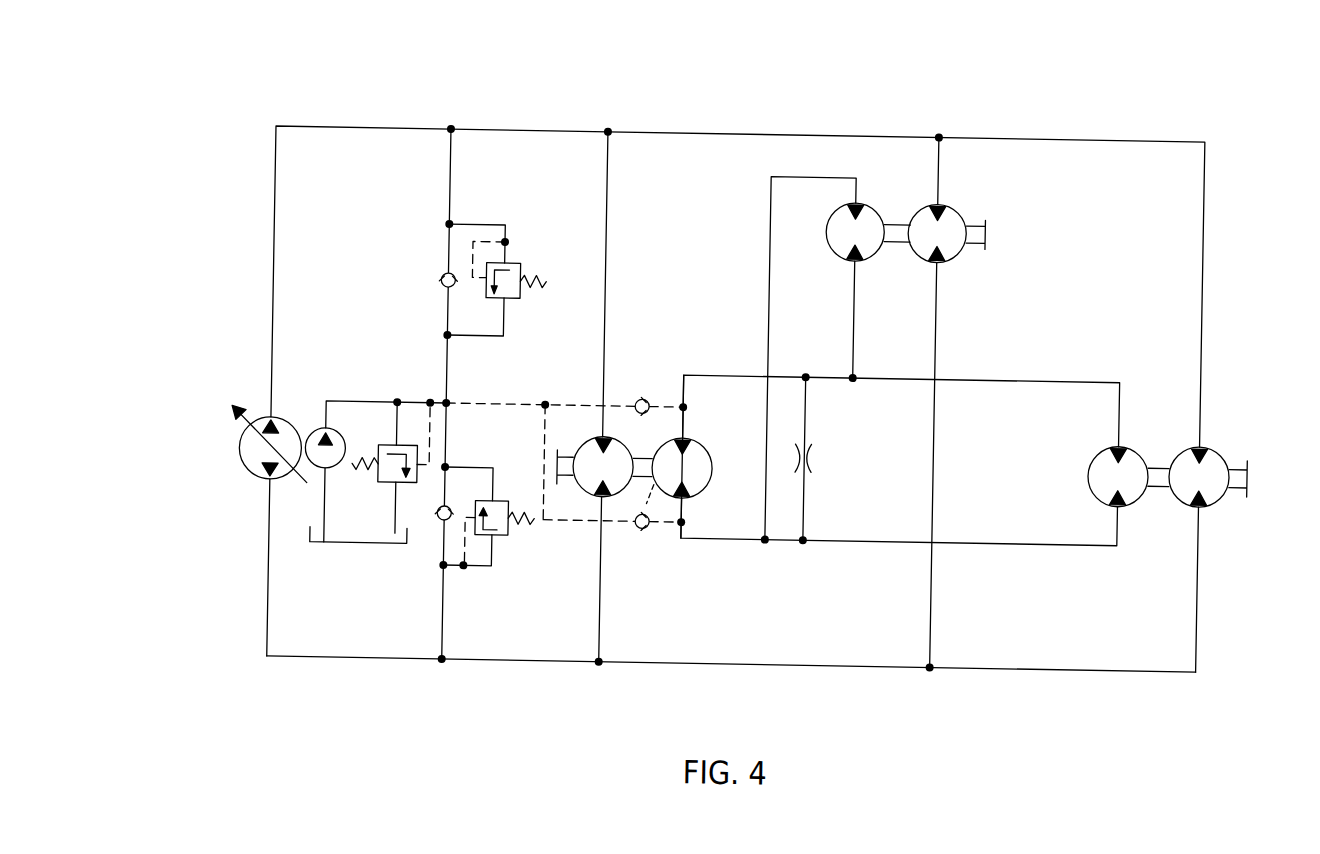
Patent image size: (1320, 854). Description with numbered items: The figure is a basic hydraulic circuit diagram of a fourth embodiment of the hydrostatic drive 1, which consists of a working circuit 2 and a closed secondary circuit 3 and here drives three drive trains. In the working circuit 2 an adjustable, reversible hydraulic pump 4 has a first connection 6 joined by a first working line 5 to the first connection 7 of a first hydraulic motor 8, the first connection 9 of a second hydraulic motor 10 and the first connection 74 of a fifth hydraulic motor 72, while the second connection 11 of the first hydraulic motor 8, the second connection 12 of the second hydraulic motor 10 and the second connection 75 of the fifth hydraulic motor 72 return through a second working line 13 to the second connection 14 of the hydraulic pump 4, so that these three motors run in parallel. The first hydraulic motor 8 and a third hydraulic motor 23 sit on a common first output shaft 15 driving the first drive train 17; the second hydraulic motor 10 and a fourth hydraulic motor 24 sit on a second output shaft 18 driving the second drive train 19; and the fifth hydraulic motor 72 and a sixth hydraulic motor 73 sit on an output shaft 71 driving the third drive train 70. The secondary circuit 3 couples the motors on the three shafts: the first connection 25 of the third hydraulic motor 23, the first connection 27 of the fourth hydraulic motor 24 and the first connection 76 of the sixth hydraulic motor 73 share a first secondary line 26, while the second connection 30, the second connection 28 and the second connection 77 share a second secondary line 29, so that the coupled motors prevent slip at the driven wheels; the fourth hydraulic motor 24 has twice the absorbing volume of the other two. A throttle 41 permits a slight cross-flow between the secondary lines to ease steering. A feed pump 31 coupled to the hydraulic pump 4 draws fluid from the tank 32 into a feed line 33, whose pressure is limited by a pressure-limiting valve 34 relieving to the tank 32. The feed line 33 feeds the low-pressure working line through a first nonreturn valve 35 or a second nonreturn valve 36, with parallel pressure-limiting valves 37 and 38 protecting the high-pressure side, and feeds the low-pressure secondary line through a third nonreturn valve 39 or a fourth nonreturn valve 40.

The hydrostatic drive 1 is at (751, 95).
The working circuit 2 is at (386, 108).
The secondary circuit 3 is at (1003, 342).
The hydraulic pump 4 is at (305, 435).
The first working line 5 is at (505, 124).
The first connection 6 is at (280, 415).
The first connection 7 is at (605, 429).
The first hydraulic motor 8 is at (598, 454).
The first connection 9 is at (936, 193).
The second hydraulic motor 10 is at (962, 233).
The second connection 11 is at (608, 489).
The second connection 12 is at (937, 248).
The second working line 13 is at (644, 659).
The second connection 14 is at (274, 485).
The first output shaft 15 is at (644, 472).
The first drive train 17 is at (568, 498).
The second output shaft 18 is at (895, 226).
The second drive train 19 is at (975, 186).
The third hydraulic motor 23 is at (696, 463).
The fourth hydraulic motor 24 is at (847, 227).
The first connection 25 is at (690, 430).
The first secondary line 26 is at (856, 325).
The first connection 27 is at (852, 250).
The second connection 28 is at (858, 195).
The second secondary line 29 is at (771, 293).
The second connection 30 is at (688, 486).
The feed pump 31 is at (336, 454).
The tank 32 is at (325, 544).
The feed line 33 is at (530, 396).
The pressure-limiting valve 34 is at (398, 443).
The first nonreturn valve 35 is at (445, 274).
The second nonreturn valve 36 is at (447, 519).
The pressure-limiting valve 37 is at (527, 264).
The pressure-limiting valve 38 is at (512, 536).
The third nonreturn valve 39 is at (645, 389).
The fourth nonreturn valve 40 is at (650, 526).
The throttle 41 is at (816, 446).
The third drive train 70 is at (1232, 413).
The output shaft 71 is at (1167, 447).
The fifth hydraulic motor 72 is at (1208, 468).
The sixth hydraulic motor 73 is at (1113, 463).
The first connection 74 is at (1201, 429).
The second connection 75 is at (1203, 492).
The first connection 76 is at (1120, 428).
The second connection 77 is at (1116, 485).